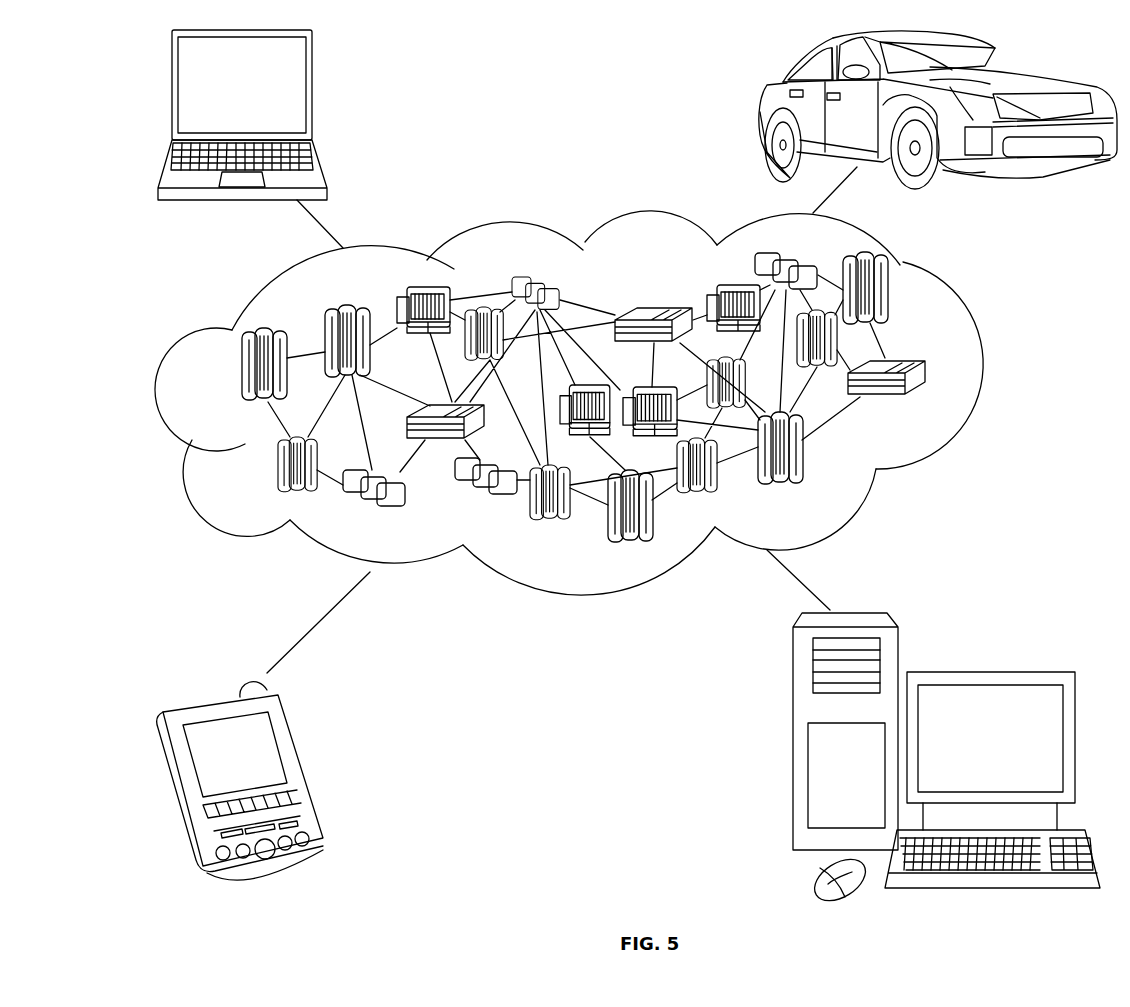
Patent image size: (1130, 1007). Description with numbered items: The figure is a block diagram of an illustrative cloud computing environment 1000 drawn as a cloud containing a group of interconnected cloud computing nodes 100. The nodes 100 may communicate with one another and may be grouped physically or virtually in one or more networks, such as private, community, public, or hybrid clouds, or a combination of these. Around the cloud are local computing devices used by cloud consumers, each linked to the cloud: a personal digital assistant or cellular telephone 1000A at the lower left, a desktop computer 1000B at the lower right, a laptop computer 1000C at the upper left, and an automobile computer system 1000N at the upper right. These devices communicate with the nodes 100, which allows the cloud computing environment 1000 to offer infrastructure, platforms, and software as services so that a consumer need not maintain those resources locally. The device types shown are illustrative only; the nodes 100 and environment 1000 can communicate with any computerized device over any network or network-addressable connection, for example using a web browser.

The cloud computing nodes 100 is at (935, 408).
The cloud computing environment 1000 is at (993, 373).
The personal digital assistant (PDA) or cellular telephone 1000A is at (302, 768).
The desktop computer 1000B is at (987, 672).
The laptop computer 1000C is at (312, 95).
The automobile computer system 1000N is at (760, 110).